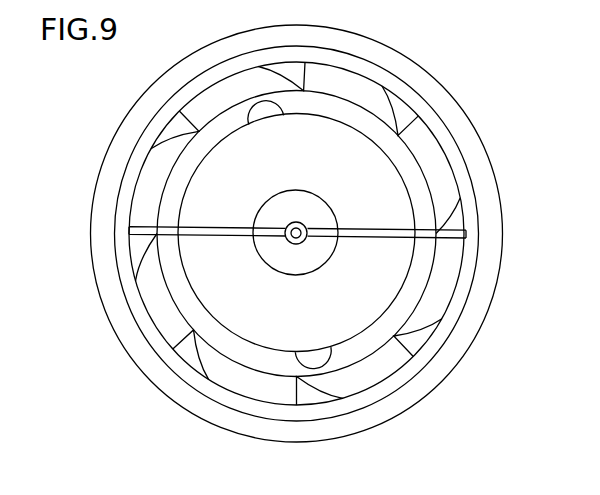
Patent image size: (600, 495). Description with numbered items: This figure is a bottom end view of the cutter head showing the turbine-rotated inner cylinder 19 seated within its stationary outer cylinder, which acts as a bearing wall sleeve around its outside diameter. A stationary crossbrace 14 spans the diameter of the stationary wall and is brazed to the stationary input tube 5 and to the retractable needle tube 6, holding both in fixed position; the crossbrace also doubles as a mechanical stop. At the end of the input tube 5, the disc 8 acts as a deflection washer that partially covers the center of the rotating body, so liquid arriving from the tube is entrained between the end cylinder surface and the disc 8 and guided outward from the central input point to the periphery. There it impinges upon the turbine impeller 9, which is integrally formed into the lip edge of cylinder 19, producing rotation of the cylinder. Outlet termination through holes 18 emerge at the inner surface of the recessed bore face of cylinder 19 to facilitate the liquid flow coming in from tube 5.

The stationary input tube 5 is at (254, 267).
The needle tube 6 is at (296, 247).
The disc 8 is at (416, 174).
The turbine impeller 9 is at (419, 112).
The crossbrace 14 is at (388, 249).
The outlet termination through hole 18 is at (300, 96).
The rotating inner cylinder 19 is at (347, 104).